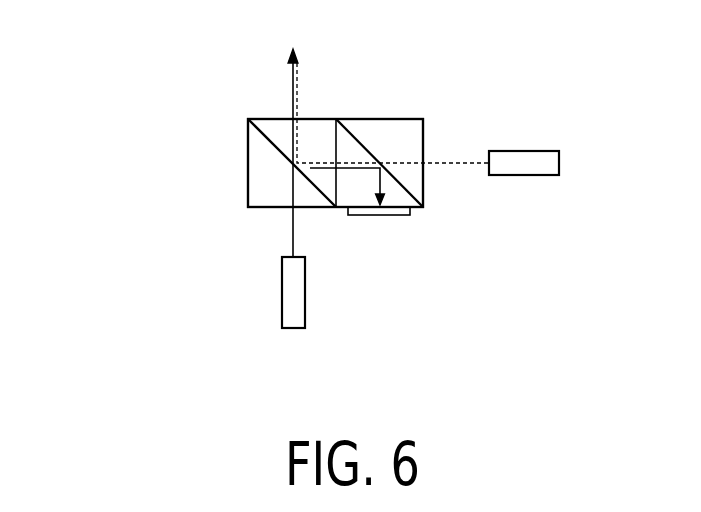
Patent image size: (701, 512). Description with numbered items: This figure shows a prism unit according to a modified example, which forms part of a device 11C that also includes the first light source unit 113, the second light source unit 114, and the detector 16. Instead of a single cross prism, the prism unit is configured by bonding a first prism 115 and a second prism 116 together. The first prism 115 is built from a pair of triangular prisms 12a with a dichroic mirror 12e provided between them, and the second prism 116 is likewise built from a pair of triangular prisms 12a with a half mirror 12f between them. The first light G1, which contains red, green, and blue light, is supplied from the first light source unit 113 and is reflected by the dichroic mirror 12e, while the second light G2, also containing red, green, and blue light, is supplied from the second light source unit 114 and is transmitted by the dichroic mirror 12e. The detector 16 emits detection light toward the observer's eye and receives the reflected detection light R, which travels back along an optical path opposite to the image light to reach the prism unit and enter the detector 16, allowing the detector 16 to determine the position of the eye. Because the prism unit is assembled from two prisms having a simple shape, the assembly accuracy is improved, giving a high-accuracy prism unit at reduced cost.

The triangular prism 12a is at (255, 146).
The dichroic mirror 12e is at (280, 155).
The half mirror 12f is at (367, 133).
The detector 16 is at (355, 217).
The first light source unit 113 is at (517, 160).
The second light source unit 114 is at (290, 325).
The first prism 115 is at (222, 126).
The second prism 116 is at (441, 195).
The device 11C is at (262, 243).
The reflected detection light R is at (387, 203).
The first light G1 is at (449, 162).
The second light G2 is at (295, 235).